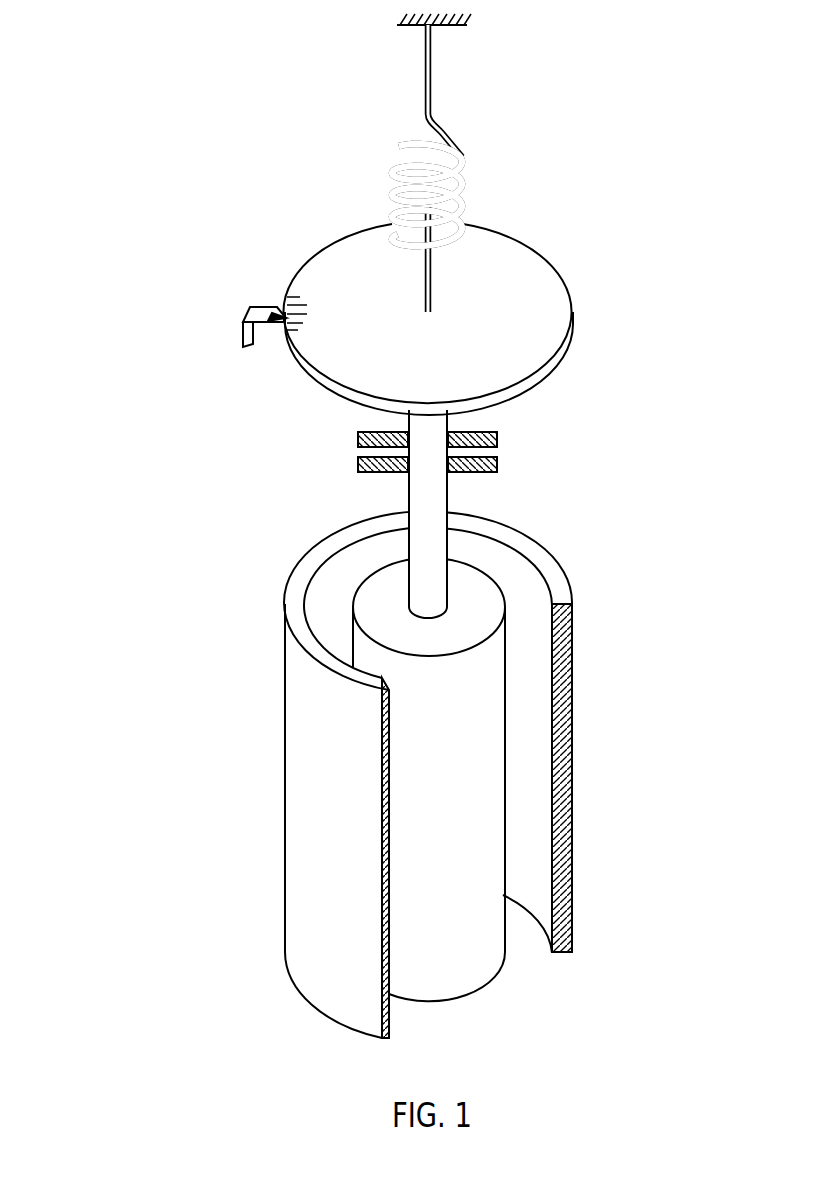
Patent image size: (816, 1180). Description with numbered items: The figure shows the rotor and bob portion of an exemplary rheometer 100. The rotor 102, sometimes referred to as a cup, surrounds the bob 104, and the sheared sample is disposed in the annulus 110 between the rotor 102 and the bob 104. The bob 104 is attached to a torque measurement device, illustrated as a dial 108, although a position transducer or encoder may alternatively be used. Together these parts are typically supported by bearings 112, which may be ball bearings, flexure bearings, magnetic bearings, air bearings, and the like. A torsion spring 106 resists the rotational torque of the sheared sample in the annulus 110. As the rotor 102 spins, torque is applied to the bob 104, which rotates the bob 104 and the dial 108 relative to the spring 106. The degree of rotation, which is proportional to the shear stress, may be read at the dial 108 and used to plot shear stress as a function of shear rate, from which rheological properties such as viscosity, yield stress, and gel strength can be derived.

The rheometer 100 is at (121, 61).
The rotor 102 is at (568, 579).
The bob 104 is at (480, 990).
The torsion spring 106 is at (437, 117).
The dial 108 is at (287, 343).
The annulus 110 is at (524, 954).
The bearings 112 is at (498, 462).